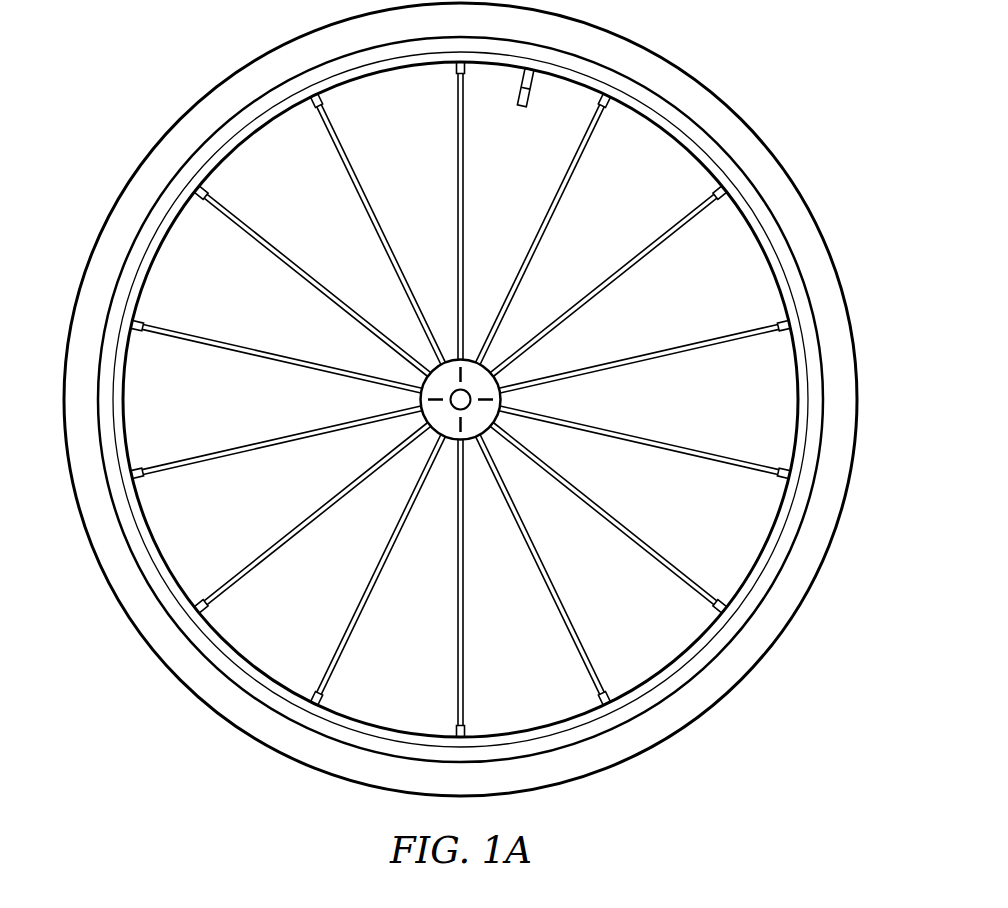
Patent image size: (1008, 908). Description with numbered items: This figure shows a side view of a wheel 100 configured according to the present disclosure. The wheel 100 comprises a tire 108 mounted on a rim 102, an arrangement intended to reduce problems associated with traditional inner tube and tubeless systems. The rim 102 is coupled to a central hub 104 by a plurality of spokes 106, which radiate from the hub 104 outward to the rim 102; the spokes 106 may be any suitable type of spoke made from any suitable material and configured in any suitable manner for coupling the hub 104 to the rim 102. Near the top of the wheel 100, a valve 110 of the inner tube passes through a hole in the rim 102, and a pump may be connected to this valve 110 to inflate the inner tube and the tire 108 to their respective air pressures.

The wheel 100 is at (200, 58).
The rim 102 is at (688, 128).
The hub 104 is at (442, 437).
The spokes 106 is at (620, 521).
The tire 108 is at (778, 185).
The valve 110 is at (522, 106).